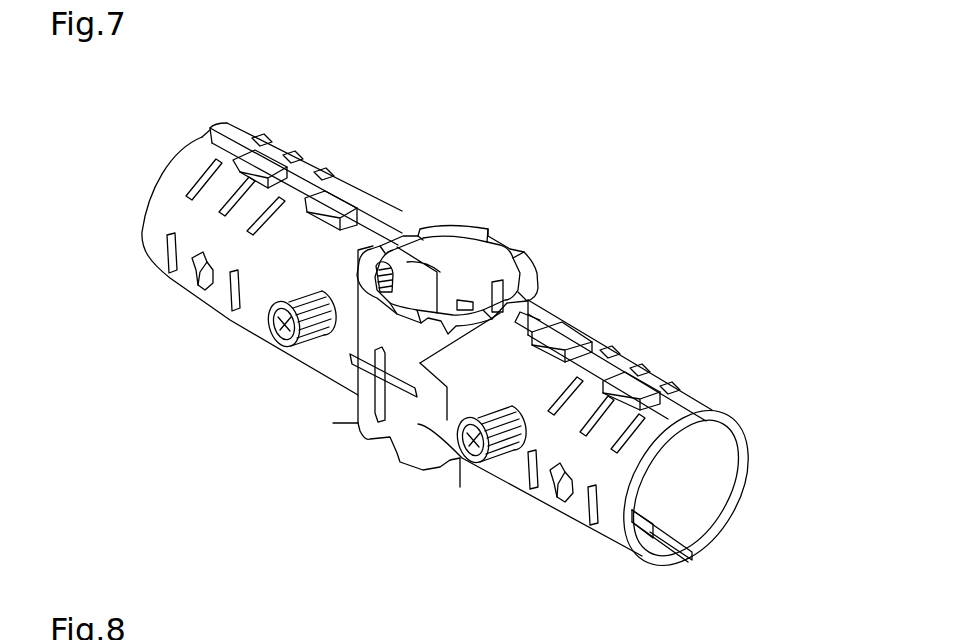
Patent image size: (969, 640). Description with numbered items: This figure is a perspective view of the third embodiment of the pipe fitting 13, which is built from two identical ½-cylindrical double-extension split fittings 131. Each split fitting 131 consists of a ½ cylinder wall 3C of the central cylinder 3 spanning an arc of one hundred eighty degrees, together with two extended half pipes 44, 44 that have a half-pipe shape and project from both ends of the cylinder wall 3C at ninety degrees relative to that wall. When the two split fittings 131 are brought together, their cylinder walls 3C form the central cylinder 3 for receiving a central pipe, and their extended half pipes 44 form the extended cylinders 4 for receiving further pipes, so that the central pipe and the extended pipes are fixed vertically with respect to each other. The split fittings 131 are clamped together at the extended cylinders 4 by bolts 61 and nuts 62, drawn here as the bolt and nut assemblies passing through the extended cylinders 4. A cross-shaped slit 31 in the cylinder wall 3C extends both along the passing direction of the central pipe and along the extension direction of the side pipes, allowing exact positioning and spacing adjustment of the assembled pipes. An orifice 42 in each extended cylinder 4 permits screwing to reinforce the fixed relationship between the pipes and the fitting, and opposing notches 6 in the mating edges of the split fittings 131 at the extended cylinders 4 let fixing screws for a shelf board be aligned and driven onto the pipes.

The pipe fitting 13 is at (144, 109).
The ½-cylindrical double-extension split fitting 131 is at (752, 419).
The extended cylinder 4 is at (744, 488).
The extended half pipe 44 is at (372, 222).
The notch 6 is at (563, 336).
The orifice 42 is at (549, 497).
The central cylinder 3 is at (390, 438).
The cross-shaped slit 31 is at (357, 422).
The ½ cylinder wall 3C is at (498, 245).
The bolt 61 is at (462, 482).
The nut 62 is at (490, 436).